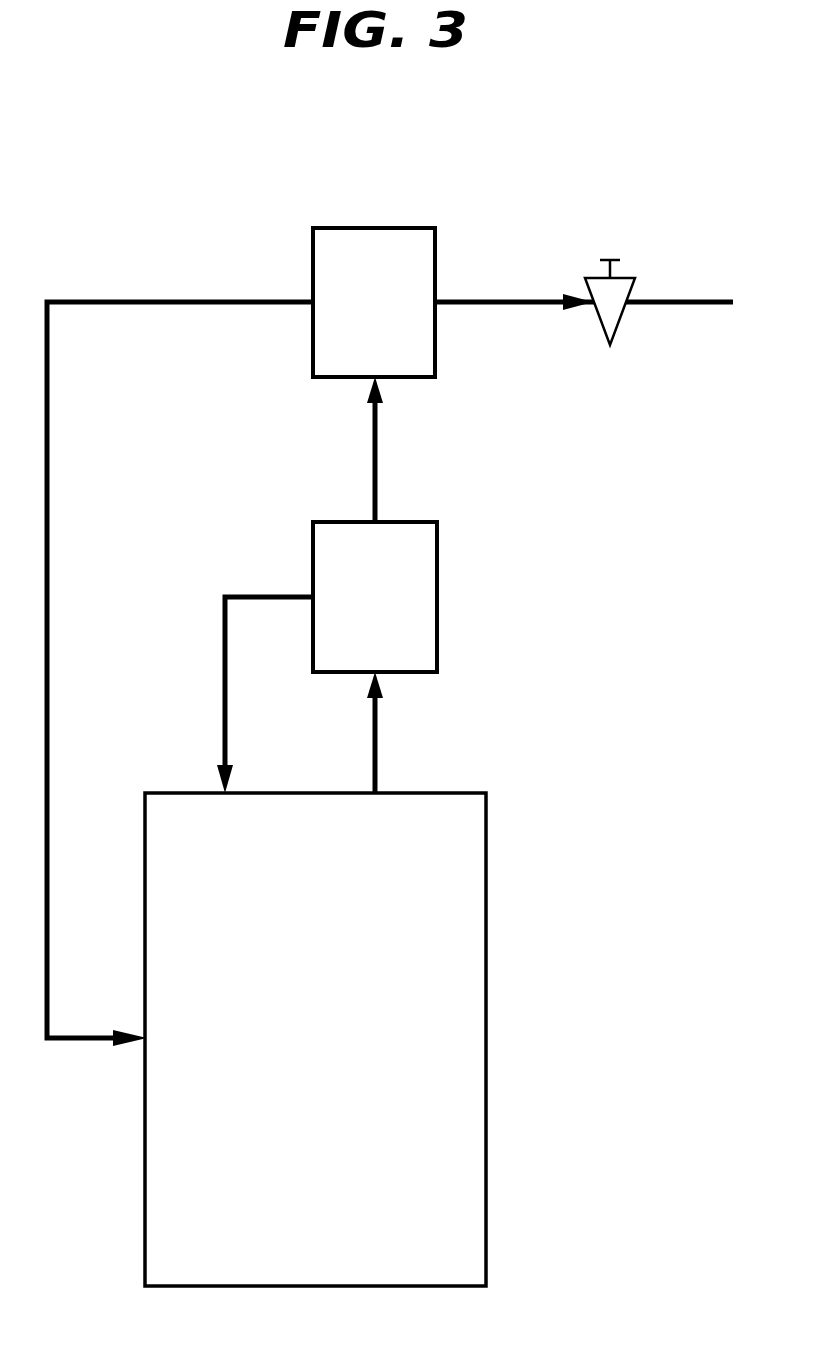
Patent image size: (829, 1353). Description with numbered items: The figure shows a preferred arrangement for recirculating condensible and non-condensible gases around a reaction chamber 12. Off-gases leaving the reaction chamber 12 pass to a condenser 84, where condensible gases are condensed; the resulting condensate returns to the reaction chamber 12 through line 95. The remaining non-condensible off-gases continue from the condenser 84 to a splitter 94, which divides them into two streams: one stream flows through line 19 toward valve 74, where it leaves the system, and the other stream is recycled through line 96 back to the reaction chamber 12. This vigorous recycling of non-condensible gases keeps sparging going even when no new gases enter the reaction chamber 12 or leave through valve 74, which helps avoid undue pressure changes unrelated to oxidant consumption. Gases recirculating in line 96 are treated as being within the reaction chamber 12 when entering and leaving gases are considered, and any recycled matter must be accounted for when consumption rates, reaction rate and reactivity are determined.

The reaction chamber 12 is at (470, 793).
The line 19 is at (483, 302).
The valve 74 is at (628, 278).
The condenser 84 is at (322, 522).
The splitter 94 is at (330, 228).
The line 95 is at (240, 597).
The line 96 is at (133, 300).